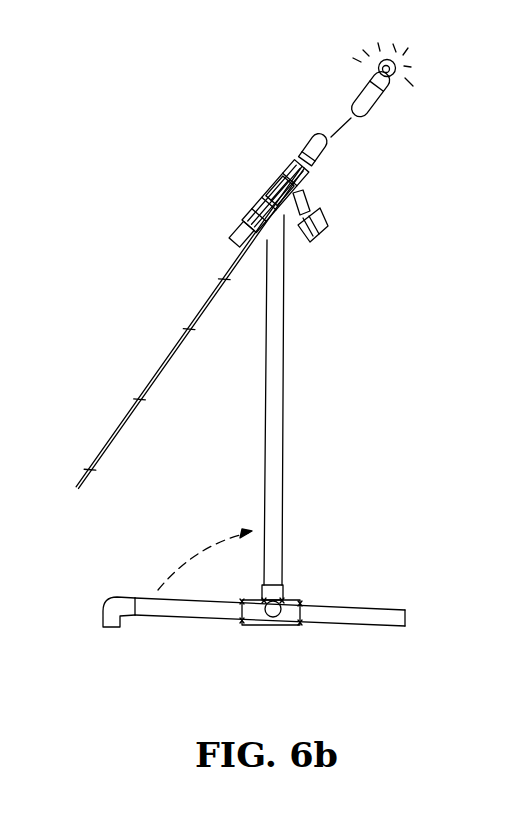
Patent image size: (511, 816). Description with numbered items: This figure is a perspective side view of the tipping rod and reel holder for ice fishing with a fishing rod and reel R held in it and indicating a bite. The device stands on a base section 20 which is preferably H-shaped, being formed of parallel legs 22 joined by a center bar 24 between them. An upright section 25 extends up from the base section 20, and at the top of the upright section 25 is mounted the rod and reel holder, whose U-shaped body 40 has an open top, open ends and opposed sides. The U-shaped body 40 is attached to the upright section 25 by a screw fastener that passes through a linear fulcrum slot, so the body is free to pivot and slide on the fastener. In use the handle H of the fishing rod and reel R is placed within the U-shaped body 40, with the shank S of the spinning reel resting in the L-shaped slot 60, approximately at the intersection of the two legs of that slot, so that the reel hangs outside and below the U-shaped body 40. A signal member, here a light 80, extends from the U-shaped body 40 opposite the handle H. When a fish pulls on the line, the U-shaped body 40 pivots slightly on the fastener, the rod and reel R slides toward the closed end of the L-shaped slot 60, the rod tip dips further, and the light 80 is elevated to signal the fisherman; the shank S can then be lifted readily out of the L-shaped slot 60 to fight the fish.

The fishing rod and reel R is at (126, 355).
The U-shaped body 40 is at (243, 220).
The L-shaped slot 60 is at (268, 172).
The handle H is at (305, 157).
The shank S is at (303, 203).
The light 80 is at (383, 100).
The upright section 25 is at (280, 430).
The base section 20 is at (280, 583).
The parallel legs 22 is at (170, 608).
The center bar 24 is at (263, 623).